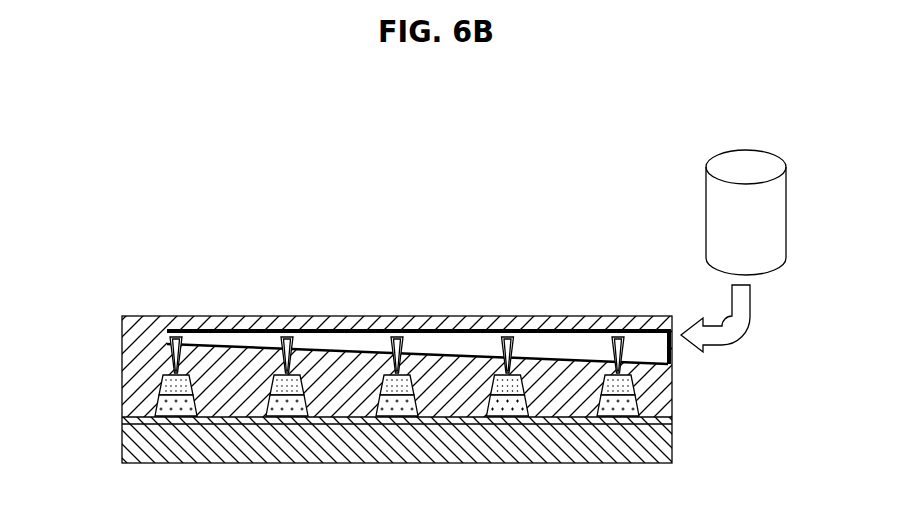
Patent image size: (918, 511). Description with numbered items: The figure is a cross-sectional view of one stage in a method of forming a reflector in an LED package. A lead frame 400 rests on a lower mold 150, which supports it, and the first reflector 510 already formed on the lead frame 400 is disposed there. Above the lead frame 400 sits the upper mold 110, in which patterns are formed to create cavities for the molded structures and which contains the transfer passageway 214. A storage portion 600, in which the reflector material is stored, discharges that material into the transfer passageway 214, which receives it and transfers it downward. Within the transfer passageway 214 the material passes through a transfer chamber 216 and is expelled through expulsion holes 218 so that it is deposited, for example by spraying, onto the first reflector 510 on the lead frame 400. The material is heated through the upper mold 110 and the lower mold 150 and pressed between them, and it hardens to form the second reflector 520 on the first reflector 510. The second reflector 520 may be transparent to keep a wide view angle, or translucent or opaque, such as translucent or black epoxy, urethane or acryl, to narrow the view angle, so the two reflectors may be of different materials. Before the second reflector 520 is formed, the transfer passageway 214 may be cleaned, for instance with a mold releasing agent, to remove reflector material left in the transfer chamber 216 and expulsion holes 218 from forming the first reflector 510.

The upper mold 110 is at (413, 316).
The lower mold 150 is at (127, 454).
The transfer passageway 214 is at (419, 284).
The transfer chamber 216 is at (257, 340).
The expulsion holes 218 is at (298, 343).
The lead frame 400 is at (122, 419).
The first reflector 510 is at (627, 400).
The second reflector 520 is at (622, 383).
The storage portion 600 is at (747, 150).